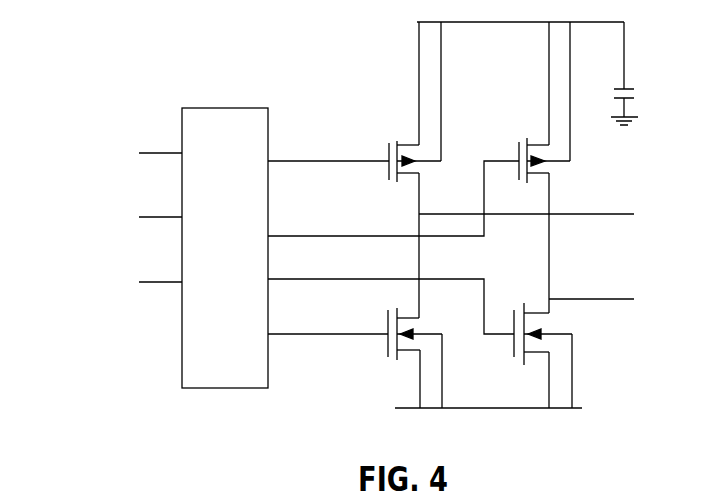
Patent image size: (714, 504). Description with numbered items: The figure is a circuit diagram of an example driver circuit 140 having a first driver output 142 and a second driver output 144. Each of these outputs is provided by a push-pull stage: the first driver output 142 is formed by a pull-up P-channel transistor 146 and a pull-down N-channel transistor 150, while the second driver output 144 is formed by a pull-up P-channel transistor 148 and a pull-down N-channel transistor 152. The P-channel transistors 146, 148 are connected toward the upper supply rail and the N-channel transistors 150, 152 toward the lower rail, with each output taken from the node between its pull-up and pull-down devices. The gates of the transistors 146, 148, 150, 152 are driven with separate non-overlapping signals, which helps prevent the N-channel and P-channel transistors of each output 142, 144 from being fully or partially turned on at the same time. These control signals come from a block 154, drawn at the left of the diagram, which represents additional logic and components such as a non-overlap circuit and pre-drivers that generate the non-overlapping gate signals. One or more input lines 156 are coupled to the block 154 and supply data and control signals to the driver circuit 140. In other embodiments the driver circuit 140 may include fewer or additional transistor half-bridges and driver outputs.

The driver circuit 140 is at (82, 105).
The first driver output 142 is at (627, 212).
The second driver output 144 is at (627, 298).
The pull-up P-channel transistor 146 is at (397, 141).
The pull-up P-channel transistor 148 is at (527, 140).
The pull-down N-channel transistor 150 is at (396, 360).
The pull-down N-channel transistor 152 is at (514, 352).
The block 154 is at (200, 388).
The input lines 156 is at (142, 148).